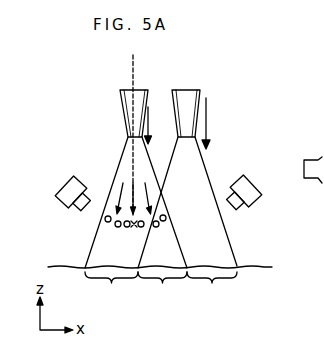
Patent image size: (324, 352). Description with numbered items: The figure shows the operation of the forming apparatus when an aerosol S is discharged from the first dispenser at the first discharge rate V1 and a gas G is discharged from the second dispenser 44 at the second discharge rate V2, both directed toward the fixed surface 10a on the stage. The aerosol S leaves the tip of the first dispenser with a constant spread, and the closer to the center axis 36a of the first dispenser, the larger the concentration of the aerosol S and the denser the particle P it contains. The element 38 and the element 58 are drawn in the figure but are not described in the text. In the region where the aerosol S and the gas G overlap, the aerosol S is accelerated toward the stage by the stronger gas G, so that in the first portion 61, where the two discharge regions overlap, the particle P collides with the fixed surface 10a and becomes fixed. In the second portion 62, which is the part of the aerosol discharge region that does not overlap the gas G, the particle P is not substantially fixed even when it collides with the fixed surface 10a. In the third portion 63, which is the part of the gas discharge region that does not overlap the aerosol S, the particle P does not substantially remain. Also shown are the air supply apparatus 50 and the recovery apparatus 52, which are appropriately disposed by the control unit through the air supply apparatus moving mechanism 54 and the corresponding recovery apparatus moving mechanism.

The center axis 36a is at (137, 73).
The first nozzle 38 is at (123, 112).
The second dispenser 44 is at (202, 96).
The first discharge rate V1 is at (159, 125).
The second discharge rate V2 is at (216, 123).
The aerosol S is at (119, 163).
The gas G is at (208, 177).
The particle P is at (163, 222).
The air supply apparatus moving mechanism 54 is at (55, 201).
The air supply apparatus 50 is at (78, 213).
The second sensor body 58 is at (257, 201).
The recovery apparatus 52 is at (236, 212).
The fixed surface 10a is at (272, 267).
The second portion 62 is at (111, 288).
The first portion 61 is at (162, 288).
The third portion 63 is at (212, 288).